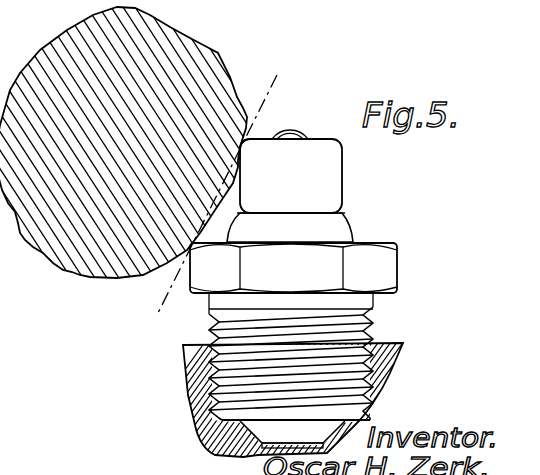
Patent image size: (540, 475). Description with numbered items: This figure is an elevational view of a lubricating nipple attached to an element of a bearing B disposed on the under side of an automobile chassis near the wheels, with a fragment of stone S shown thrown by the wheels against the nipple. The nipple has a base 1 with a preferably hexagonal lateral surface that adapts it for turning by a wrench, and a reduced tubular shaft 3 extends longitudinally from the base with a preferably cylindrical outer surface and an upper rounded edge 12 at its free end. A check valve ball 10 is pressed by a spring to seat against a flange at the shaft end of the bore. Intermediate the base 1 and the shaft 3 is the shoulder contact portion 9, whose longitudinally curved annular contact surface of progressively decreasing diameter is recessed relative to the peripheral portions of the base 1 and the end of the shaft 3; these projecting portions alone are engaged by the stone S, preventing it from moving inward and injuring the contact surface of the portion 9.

The base 1 is at (380, 265).
The tubular shaft 3 is at (318, 172).
The shoulder contact portion 9 is at (337, 228).
The check valve ball 10 is at (297, 132).
The upper rounded edge 12 is at (239, 149).
The stone S is at (102, 258).
The bearing B is at (192, 393).